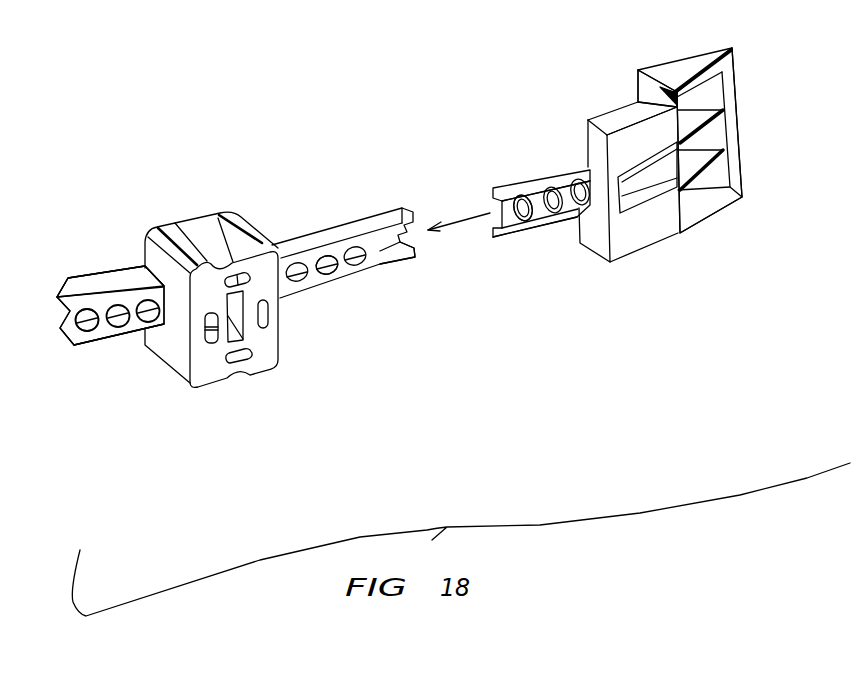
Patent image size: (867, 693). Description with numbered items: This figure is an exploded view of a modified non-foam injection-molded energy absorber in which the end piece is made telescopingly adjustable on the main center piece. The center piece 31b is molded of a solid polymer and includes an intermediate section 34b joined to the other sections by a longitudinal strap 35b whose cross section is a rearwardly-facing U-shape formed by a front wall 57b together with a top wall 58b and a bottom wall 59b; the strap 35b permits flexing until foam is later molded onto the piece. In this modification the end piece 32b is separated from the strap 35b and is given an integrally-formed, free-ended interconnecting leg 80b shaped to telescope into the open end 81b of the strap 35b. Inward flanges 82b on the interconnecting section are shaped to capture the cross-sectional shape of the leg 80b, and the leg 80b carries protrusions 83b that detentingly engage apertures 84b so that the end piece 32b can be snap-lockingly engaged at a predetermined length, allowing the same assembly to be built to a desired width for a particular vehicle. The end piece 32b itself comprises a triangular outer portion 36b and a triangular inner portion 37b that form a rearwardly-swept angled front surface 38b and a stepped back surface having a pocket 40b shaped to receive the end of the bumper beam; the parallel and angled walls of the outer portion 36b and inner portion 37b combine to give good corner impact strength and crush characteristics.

The injection-molded piece 31b is at (77, 241).
The end section 32b is at (709, 236).
The intermediate section 34b is at (243, 373).
The longitudinal strap 35b is at (102, 278).
The triangular outer portion 36b is at (723, 207).
The triangular inner portion 37b is at (628, 255).
The rearwardly-swept angled front surface 38b is at (622, 138).
The pocket 40b is at (634, 89).
The front wall 57b is at (102, 333).
The top wall 58b is at (134, 277).
The bottom wall 59b is at (80, 347).
The interconnecting leg 80b is at (520, 237).
The open end 81b is at (404, 242).
The inward flange 82b is at (387, 238).
The protrusion 83b is at (523, 196).
The aperture 84b is at (353, 267).